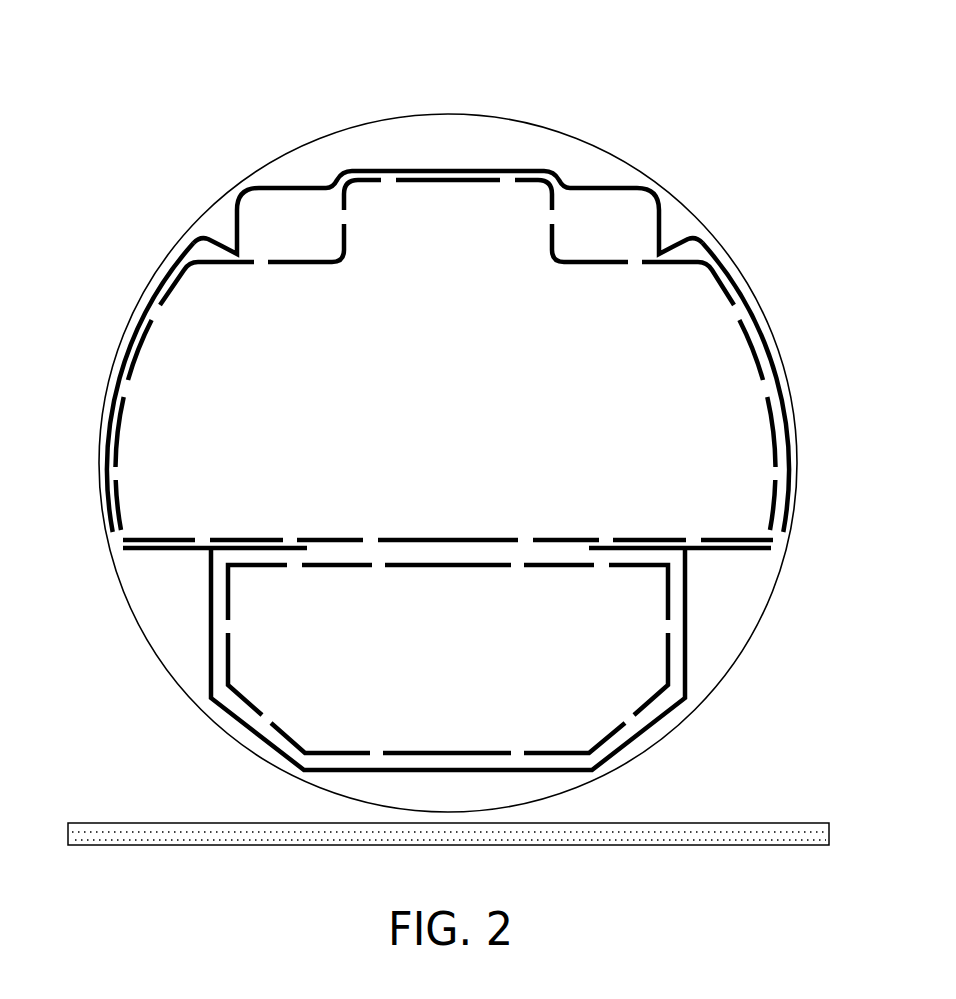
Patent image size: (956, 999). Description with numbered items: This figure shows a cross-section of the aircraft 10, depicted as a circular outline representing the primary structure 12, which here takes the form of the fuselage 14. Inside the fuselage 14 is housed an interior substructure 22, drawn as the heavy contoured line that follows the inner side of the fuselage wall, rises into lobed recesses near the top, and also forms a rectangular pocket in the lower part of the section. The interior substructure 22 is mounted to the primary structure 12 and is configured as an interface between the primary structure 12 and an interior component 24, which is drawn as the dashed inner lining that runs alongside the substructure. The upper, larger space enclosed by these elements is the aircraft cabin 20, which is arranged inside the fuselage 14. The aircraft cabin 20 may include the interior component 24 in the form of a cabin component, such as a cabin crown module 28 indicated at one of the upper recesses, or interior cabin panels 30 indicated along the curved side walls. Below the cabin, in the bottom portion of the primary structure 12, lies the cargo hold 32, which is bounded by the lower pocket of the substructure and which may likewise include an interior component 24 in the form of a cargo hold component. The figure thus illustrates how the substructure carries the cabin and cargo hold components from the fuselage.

The aircraft 10 is at (213, 54).
The primary structure 12 is at (237, 185).
The fuselage 14 is at (323, 137).
The aircraft cabin 20 is at (459, 124).
The interior substructure 22 is at (583, 188).
The interior component 24 is at (323, 300).
The cabin crown module 28 is at (552, 302).
The interior cabin panels 30 is at (125, 413).
The cargo hold 32 is at (443, 575).